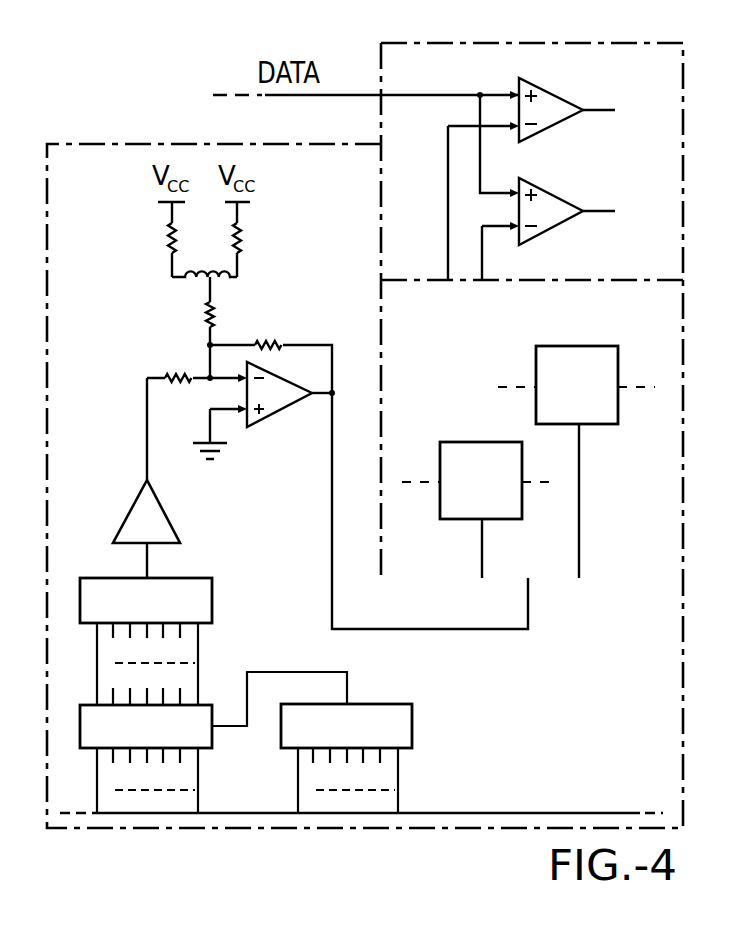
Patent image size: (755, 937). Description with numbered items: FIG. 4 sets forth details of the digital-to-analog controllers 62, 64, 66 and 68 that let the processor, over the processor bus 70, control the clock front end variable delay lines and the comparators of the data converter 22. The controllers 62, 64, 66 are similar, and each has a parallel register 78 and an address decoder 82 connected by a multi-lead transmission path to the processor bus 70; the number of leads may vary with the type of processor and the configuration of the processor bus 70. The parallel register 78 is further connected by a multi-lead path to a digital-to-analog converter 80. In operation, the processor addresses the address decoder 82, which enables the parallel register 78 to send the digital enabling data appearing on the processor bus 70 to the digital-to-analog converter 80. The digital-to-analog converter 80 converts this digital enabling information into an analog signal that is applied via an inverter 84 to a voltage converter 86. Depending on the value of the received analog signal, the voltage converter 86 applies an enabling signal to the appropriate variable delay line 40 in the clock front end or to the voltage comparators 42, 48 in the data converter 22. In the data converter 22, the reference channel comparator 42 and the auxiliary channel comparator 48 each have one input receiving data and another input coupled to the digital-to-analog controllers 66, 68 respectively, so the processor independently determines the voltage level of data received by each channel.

The data converter 22 is at (551, 293).
The variable delay line 40 is at (603, 425).
The voltage comparator 42 is at (548, 128).
The voltage comparator 48 is at (548, 229).
The digital-to-analog controller 62 is at (365, 469).
The digital-to-analog controller 64 is at (365, 469).
The digital-to-analog controller 66 is at (365, 469).
The digital-to-analog controller 68 is at (125, 144).
The processor bus 70 is at (540, 812).
The parallel register 78 is at (88, 749).
The digital-to-analog converter 80 is at (197, 578).
The address decoder 82 is at (397, 704).
The inverter 84 is at (130, 512).
The voltage converter 86 is at (274, 412).